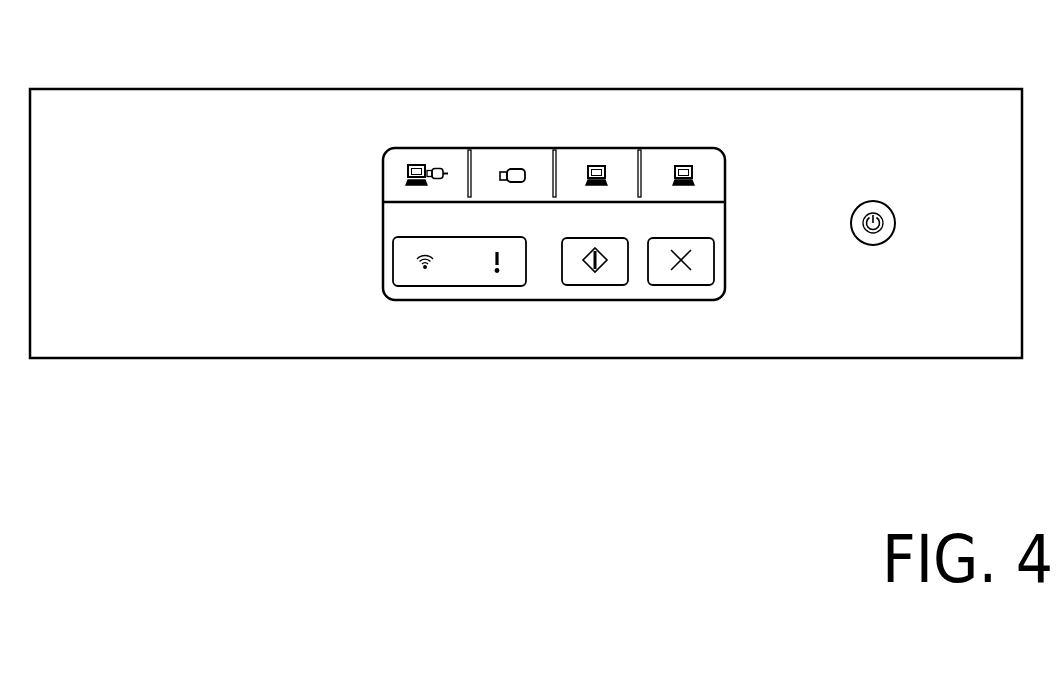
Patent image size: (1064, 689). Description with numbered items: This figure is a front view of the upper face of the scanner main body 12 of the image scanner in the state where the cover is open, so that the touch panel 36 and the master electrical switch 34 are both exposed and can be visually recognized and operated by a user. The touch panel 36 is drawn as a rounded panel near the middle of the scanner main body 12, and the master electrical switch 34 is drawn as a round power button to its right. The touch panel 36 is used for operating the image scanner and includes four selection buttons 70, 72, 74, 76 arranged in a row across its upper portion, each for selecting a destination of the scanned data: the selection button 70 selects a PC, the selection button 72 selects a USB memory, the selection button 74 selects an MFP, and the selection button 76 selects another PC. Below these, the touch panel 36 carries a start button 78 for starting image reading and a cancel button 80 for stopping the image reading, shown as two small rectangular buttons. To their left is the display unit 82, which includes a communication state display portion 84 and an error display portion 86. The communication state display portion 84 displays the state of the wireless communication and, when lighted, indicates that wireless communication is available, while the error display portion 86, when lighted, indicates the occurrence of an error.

The scanner main body 12 is at (203, 112).
The master electrical switch 34 is at (872, 192).
The touch panel 36 is at (553, 127).
The selection button 70 is at (404, 158).
The selection button 72 is at (489, 158).
The selection button 74 is at (617, 158).
The selection button 76 is at (706, 158).
The start button 78 is at (617, 273).
The cancel button 80 is at (703, 276).
The display unit 82 is at (391, 262).
The communication state display portion 84 is at (411, 277).
The error display portion 86 is at (486, 275).